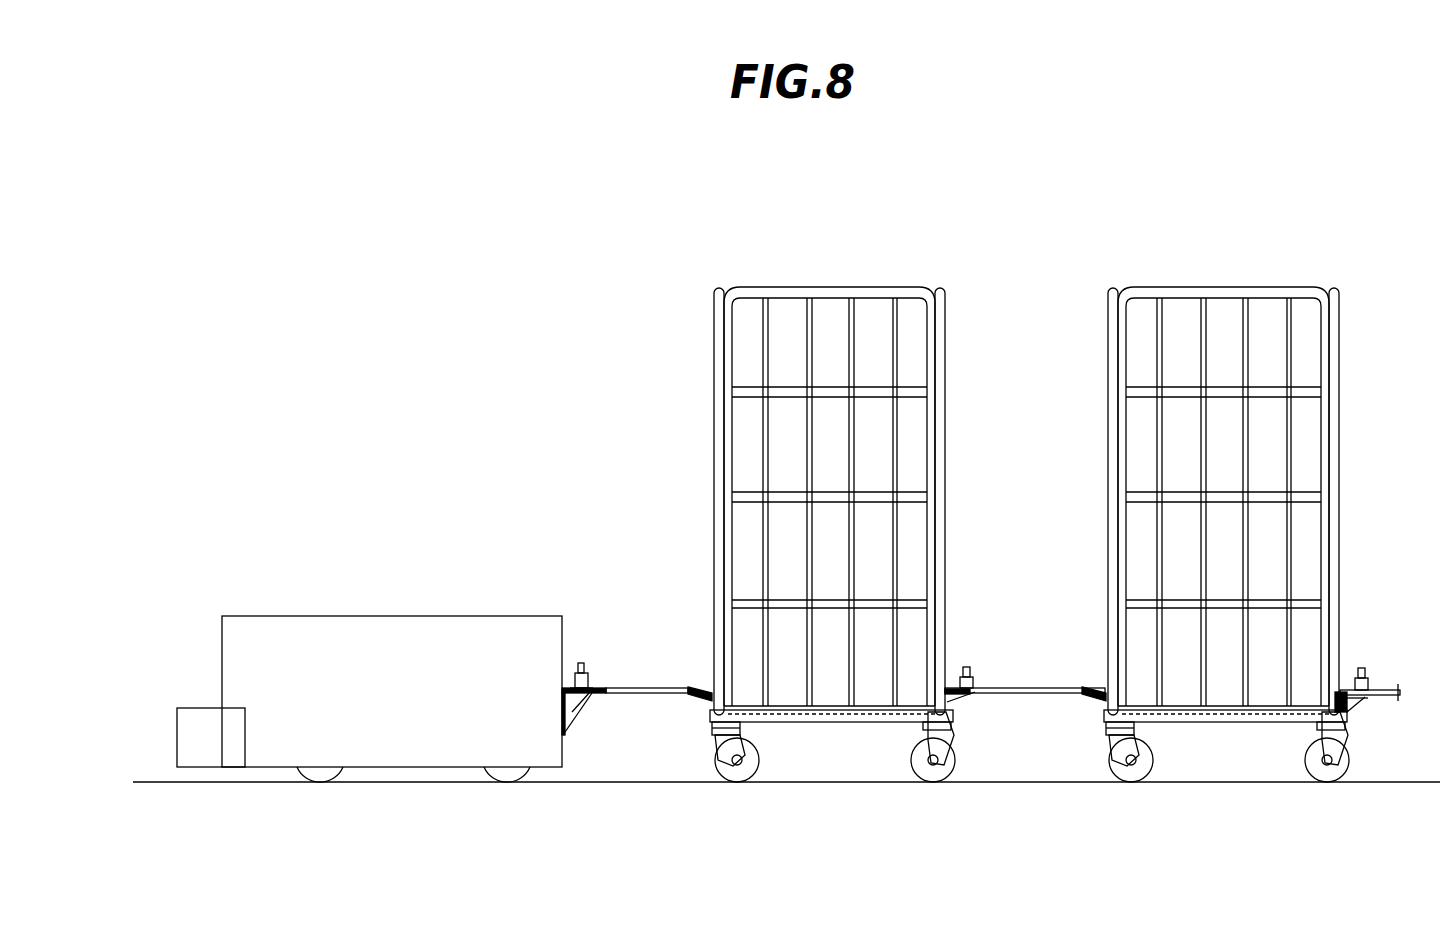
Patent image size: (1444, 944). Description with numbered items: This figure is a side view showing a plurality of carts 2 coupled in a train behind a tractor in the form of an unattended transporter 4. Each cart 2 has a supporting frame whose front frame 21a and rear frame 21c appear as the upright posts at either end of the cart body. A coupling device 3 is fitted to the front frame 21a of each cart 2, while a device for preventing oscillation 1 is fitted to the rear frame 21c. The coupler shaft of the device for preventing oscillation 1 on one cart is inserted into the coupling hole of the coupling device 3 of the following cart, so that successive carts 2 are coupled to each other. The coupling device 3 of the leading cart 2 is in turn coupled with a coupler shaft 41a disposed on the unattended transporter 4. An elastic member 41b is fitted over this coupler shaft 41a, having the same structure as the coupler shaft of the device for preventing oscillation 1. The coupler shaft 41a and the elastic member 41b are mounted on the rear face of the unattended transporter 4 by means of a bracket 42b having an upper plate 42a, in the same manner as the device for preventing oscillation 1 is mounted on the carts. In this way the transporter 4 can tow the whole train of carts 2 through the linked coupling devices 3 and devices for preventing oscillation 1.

The device for preventing oscillation 1 is at (971, 715).
The cart 2 is at (1008, 475).
The coupling device 3 is at (995, 678).
The unattended transporter 4 is at (396, 604).
The front frame 21a is at (718, 348).
The rear frame 21c is at (940, 348).
The coupler shaft 41a is at (583, 668).
The elastic member 41b is at (590, 692).
The upper plate 42a is at (578, 690).
The bracket 42b is at (573, 708).